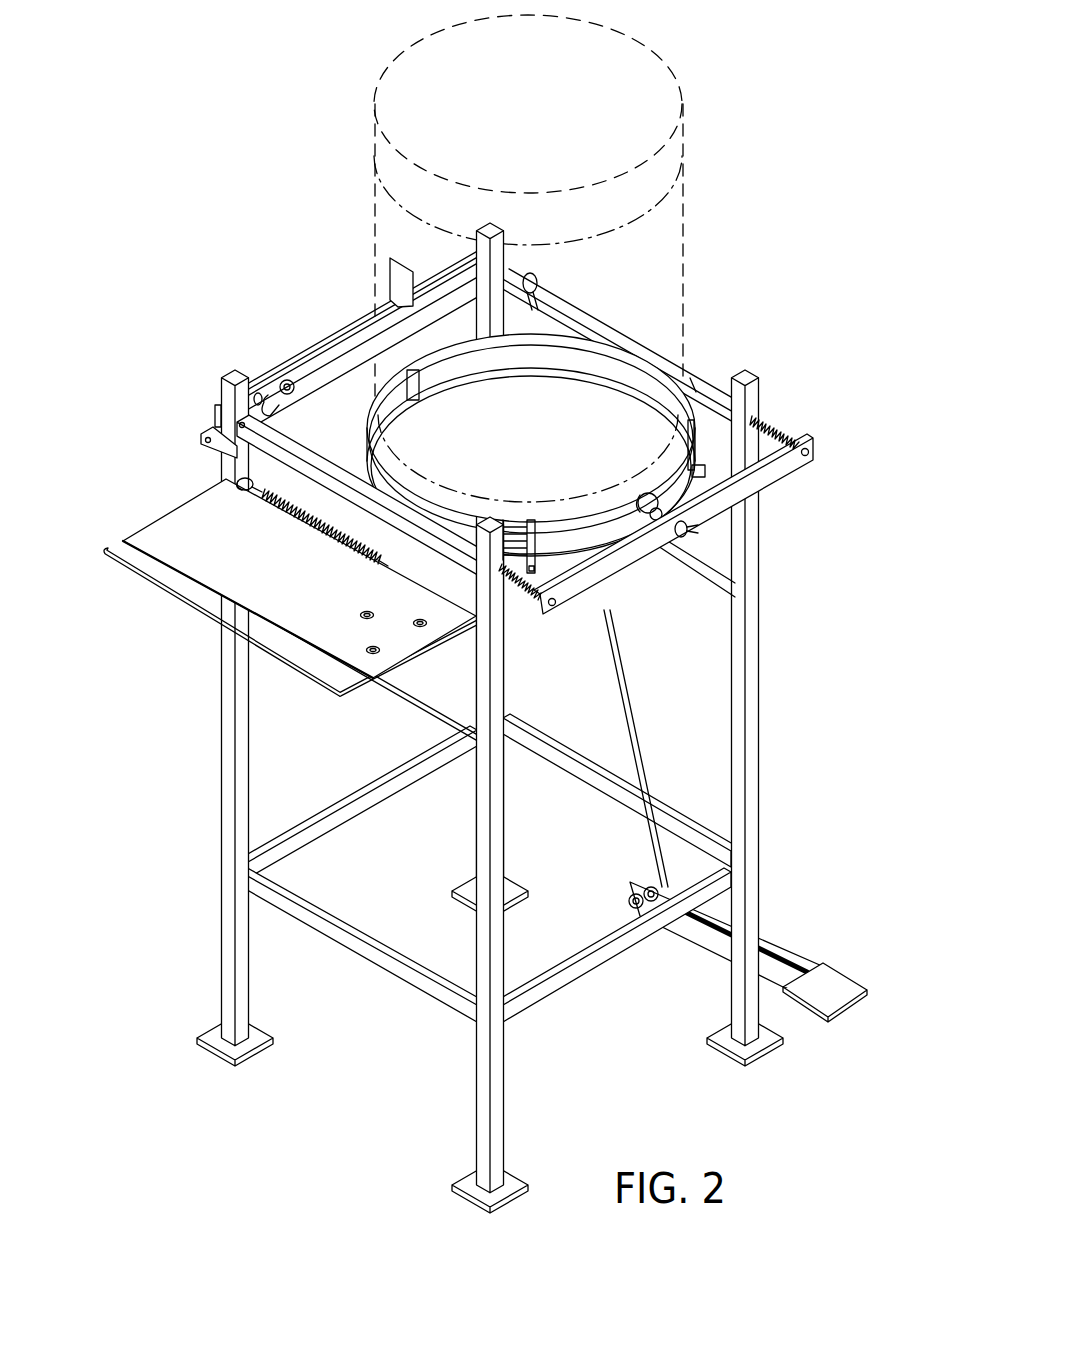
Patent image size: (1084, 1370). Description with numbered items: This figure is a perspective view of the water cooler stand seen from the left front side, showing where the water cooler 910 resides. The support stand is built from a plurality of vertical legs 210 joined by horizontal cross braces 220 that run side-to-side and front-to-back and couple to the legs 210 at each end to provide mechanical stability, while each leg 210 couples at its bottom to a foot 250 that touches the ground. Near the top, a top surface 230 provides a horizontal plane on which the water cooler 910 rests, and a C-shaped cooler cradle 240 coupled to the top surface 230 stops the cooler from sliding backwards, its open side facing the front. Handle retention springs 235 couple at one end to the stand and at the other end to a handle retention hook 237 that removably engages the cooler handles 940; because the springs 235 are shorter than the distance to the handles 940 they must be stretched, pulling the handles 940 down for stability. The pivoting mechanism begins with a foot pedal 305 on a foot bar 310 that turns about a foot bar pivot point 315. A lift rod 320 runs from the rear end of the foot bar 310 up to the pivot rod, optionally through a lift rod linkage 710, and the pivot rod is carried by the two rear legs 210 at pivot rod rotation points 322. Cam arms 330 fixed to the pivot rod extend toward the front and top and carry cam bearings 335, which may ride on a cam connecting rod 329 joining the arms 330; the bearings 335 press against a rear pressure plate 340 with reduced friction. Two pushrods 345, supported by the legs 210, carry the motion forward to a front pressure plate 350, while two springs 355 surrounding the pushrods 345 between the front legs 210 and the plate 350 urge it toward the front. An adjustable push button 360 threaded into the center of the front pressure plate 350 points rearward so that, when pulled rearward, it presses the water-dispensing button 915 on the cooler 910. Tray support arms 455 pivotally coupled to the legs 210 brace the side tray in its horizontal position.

The water cooler 910 is at (682, 160).
The lift rod linkage 710 is at (540, 278).
The rear pressure plate 340 is at (450, 268).
The cooler handles 940 is at (393, 287).
The cooler cradle 240 is at (607, 348).
The cam connecting rod 329 is at (289, 385).
The top surface 230 is at (323, 362).
The cam bearings 335 is at (277, 408).
The pushrods 345 is at (283, 502).
The cam arms 330 is at (262, 400).
The springs 355 is at (775, 427).
The handle retention hook 237 is at (223, 478).
The handle retention springs 235 is at (272, 518).
The pivot rod rotation points 322 is at (153, 523).
The water-dispensing button 915 is at (660, 490).
The adjustable push button 360 is at (683, 531).
The lift rod 320 is at (366, 496).
The front pressure plate 350 is at (607, 623).
The tray support arms 455 is at (473, 668).
The legs 210 is at (503, 768).
The cross braces 220 is at (727, 886).
The foot bar 310 is at (777, 948).
The foot pedal 305 is at (840, 983).
The foot bar pivot point 315 is at (735, 968).
The foot 250 is at (462, 1185).